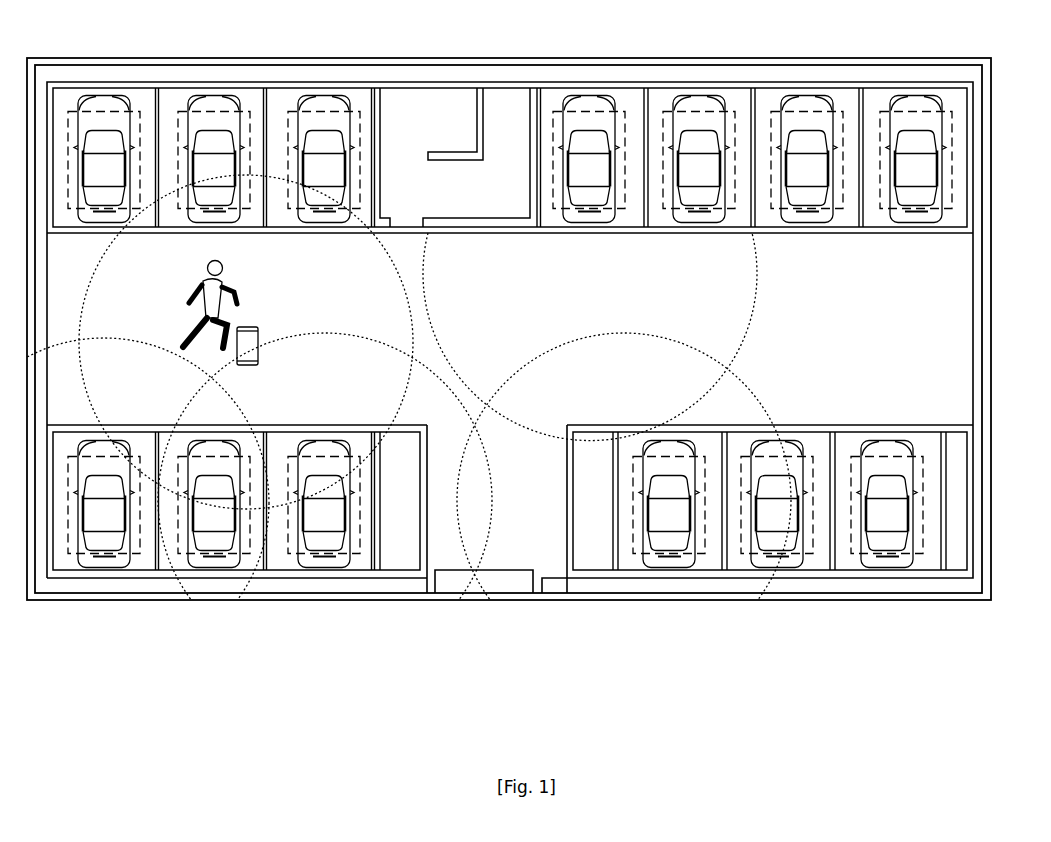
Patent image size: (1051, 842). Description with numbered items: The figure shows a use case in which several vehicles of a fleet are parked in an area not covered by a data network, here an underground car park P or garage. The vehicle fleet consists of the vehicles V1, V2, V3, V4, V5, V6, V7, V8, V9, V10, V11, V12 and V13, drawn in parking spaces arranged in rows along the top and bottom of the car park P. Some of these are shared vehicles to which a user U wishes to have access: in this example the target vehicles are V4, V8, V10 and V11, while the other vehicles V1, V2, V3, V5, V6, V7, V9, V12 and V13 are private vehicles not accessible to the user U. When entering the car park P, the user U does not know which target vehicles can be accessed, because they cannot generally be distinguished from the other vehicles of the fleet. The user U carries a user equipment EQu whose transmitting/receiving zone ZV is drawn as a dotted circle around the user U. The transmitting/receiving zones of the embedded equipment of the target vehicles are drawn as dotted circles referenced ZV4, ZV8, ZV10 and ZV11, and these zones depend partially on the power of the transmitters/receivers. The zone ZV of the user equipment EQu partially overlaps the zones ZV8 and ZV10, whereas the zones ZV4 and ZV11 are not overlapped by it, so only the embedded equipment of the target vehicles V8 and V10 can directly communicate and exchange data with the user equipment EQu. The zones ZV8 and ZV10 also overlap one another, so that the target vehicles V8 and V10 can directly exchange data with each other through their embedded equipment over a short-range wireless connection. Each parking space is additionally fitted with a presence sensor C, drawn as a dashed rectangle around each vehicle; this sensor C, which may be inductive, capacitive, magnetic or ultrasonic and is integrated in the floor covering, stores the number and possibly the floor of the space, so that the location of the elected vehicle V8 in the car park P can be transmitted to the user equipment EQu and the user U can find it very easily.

The car park P is at (999, 251).
The vehicle V1 is at (107, 98).
The vehicle V2 is at (217, 98).
The vehicle V3 is at (327, 98).
The target vehicle V4 is at (592, 98).
The vehicle V5 is at (702, 98).
The vehicle V6 is at (810, 98).
The vehicle V7 is at (919, 98).
The target vehicle V8 is at (102, 566).
The vehicle V9 is at (212, 566).
The target vehicle V10 is at (322, 566).
The target vehicle V11 is at (667, 563).
The vehicle V12 is at (775, 563).
The vehicle V13 is at (885, 563).
The presence sensor C is at (135, 111).
The user U is at (205, 277).
The user equipment EQu is at (253, 324).
The transmitting/receiving zone ZV is at (404, 284).
The transmitting/receiving zone ZV4 is at (729, 288).
The transmitting/receiving zone ZV8 is at (100, 337).
The transmitting/receiving zone ZV10 is at (462, 402).
The transmitting/receiving zone ZV11 is at (737, 375).